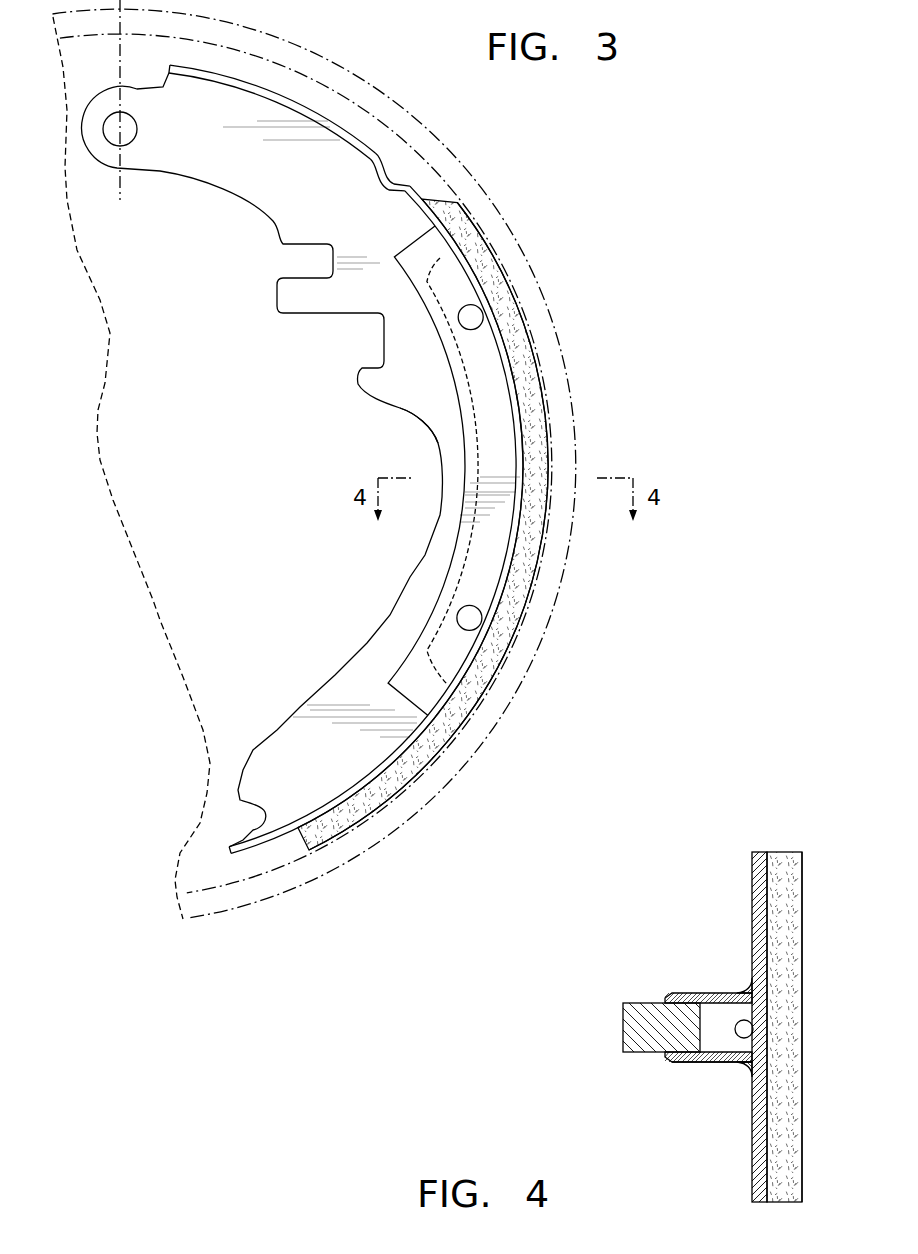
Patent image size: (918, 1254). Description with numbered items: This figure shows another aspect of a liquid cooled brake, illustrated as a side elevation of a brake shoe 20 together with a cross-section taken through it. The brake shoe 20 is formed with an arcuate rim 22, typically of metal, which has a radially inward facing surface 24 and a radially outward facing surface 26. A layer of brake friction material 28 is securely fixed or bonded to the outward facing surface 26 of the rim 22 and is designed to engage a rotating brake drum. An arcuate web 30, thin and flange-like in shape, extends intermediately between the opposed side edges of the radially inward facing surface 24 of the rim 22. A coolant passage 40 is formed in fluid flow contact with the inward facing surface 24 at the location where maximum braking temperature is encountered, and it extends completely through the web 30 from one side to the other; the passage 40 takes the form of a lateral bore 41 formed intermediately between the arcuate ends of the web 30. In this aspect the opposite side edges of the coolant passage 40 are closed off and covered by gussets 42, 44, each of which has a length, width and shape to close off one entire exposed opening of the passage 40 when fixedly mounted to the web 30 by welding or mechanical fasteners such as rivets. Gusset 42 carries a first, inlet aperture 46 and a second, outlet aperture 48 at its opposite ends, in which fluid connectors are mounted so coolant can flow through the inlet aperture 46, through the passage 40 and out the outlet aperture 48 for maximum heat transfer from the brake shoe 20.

In FIG. 3, the brake shoe 20 is at (175, 212).
In FIG. 3, the arcuate rim 22 is at (450, 193).
In FIG. 4, the arcuate rim 22 is at (757, 840).
In FIG. 3, the radially inward facing surface 24 is at (273, 220).
In FIG. 4, the radially inward facing surface 24 is at (745, 898).
In FIG. 3, the radially outward facing surface 26 is at (485, 262).
In FIG. 4, the radially outward facing surface 26 is at (777, 883).
In FIG. 3, the brake friction material 28 is at (537, 427).
In FIG. 4, the brake friction material 28 is at (783, 935).
In FIG. 3, the arcuate web 30 is at (283, 757).
In FIG. 4, the arcuate web 30 is at (628, 1022).
In FIG. 3, the coolant passage 40 is at (487, 393).
In FIG. 4, the coolant passage 40 is at (743, 1024).
In FIG. 3, the lateral bore 41 is at (465, 570).
In FIG. 3, the gusset 42 is at (440, 420).
In FIG. 4, the gusset 42 is at (697, 1057).
In FIG. 4, the gusset 44 is at (704, 988).
In FIG. 3, the inlet aperture 46 is at (483, 318).
In FIG. 3, the outlet aperture 48 is at (475, 630).
In FIG. 4, the outlet aperture 48 is at (714, 1058).